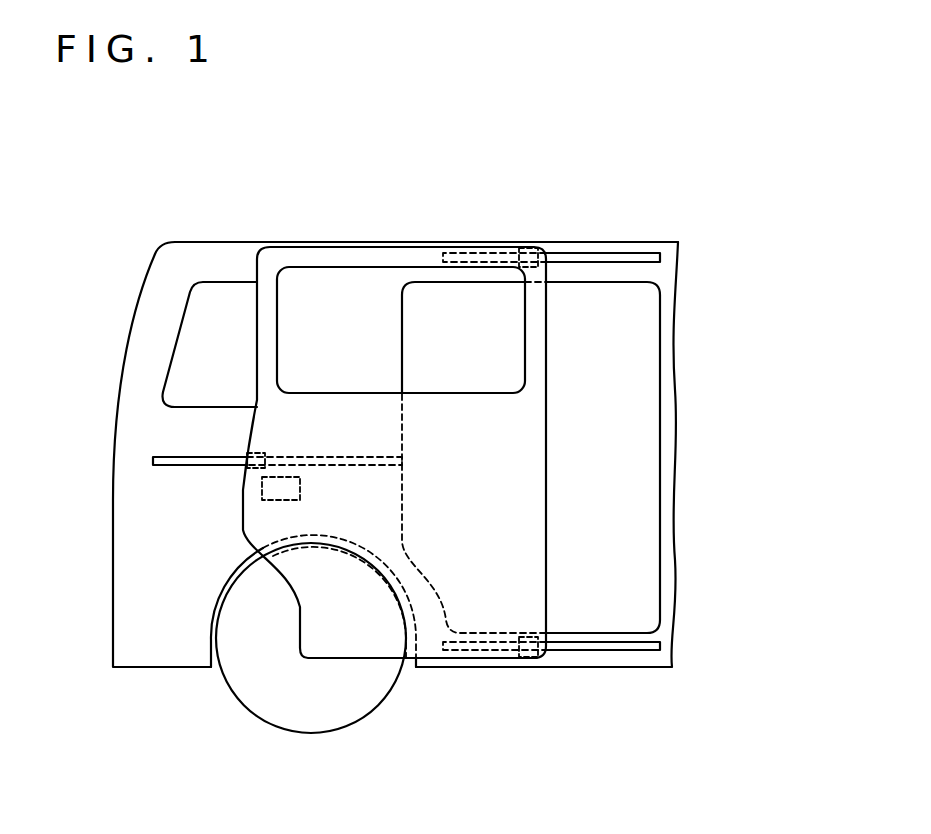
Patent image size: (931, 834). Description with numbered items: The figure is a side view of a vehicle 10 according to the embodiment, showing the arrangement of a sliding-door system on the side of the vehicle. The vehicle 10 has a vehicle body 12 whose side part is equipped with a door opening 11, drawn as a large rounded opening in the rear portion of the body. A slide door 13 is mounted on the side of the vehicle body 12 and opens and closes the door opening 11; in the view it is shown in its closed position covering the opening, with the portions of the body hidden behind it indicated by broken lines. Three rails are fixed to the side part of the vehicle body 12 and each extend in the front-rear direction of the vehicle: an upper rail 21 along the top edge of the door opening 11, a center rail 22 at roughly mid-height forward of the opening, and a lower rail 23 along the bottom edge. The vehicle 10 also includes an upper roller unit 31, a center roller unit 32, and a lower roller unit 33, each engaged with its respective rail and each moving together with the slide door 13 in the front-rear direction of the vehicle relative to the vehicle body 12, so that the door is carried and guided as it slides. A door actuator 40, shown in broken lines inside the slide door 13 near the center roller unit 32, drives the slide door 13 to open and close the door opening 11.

The vehicle 10 is at (740, 170).
The door opening 11 is at (660, 496).
The vehicle body 12 is at (670, 417).
The slide door 13 is at (548, 445).
The upper rail 21 is at (590, 255).
The center rail 22 is at (175, 467).
The lower rail 23 is at (630, 652).
The upper roller unit 31 is at (517, 245).
The center roller unit 32 is at (263, 452).
The lower roller unit 33 is at (517, 658).
The door actuator 40 is at (301, 487).